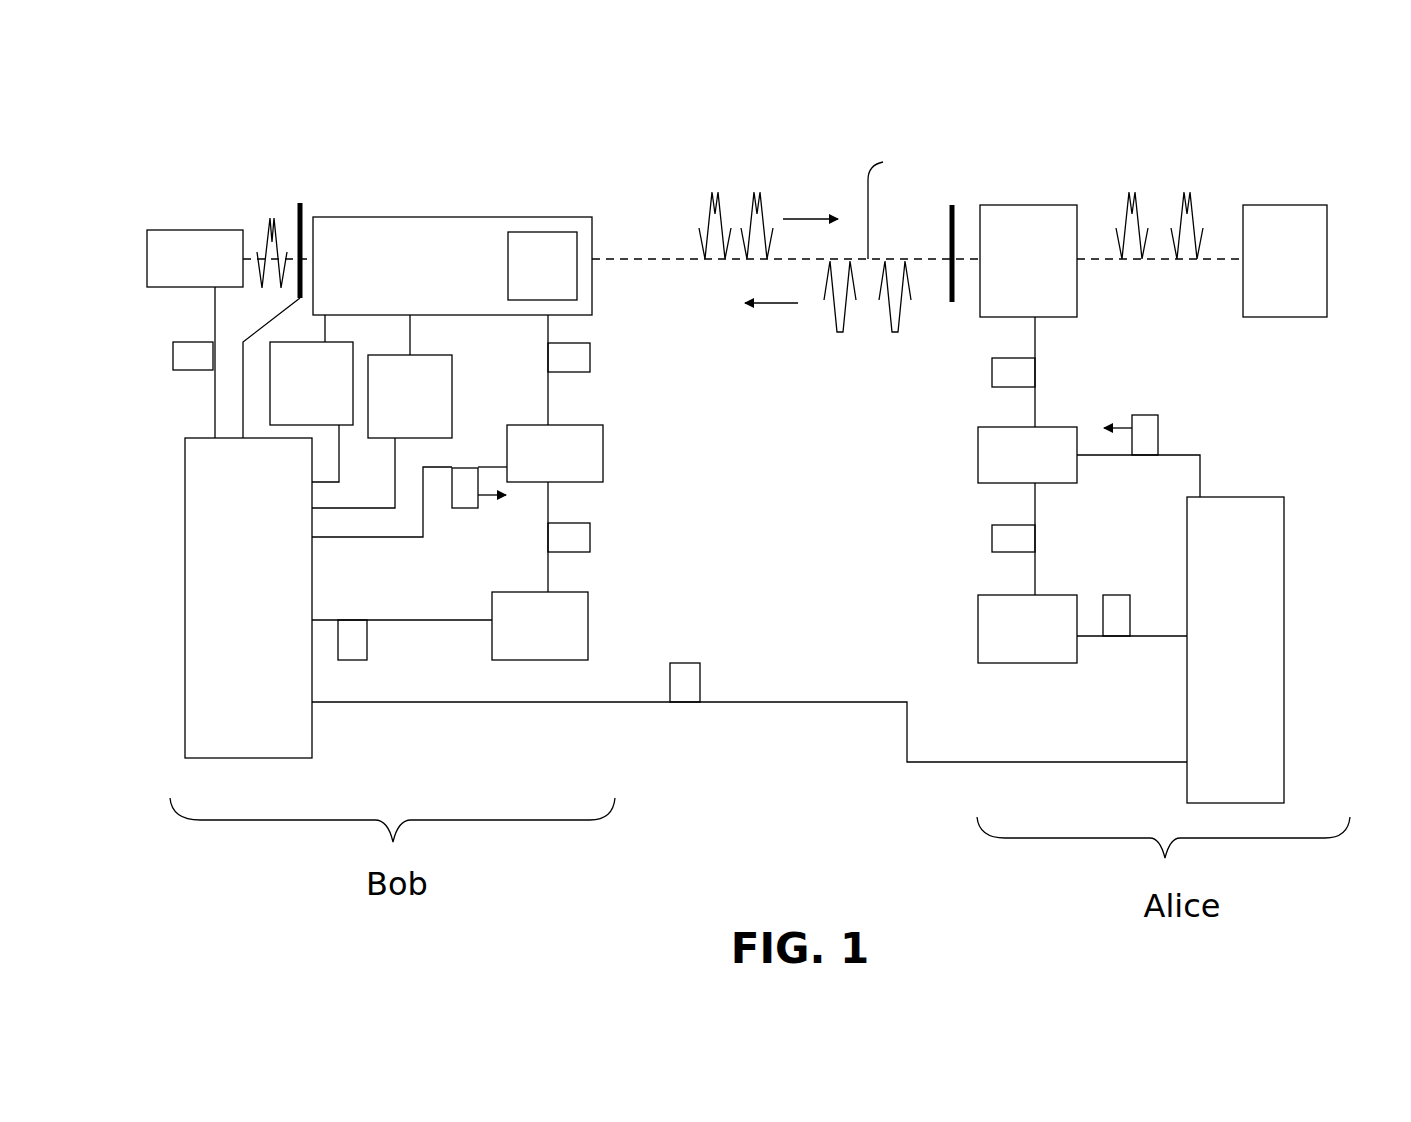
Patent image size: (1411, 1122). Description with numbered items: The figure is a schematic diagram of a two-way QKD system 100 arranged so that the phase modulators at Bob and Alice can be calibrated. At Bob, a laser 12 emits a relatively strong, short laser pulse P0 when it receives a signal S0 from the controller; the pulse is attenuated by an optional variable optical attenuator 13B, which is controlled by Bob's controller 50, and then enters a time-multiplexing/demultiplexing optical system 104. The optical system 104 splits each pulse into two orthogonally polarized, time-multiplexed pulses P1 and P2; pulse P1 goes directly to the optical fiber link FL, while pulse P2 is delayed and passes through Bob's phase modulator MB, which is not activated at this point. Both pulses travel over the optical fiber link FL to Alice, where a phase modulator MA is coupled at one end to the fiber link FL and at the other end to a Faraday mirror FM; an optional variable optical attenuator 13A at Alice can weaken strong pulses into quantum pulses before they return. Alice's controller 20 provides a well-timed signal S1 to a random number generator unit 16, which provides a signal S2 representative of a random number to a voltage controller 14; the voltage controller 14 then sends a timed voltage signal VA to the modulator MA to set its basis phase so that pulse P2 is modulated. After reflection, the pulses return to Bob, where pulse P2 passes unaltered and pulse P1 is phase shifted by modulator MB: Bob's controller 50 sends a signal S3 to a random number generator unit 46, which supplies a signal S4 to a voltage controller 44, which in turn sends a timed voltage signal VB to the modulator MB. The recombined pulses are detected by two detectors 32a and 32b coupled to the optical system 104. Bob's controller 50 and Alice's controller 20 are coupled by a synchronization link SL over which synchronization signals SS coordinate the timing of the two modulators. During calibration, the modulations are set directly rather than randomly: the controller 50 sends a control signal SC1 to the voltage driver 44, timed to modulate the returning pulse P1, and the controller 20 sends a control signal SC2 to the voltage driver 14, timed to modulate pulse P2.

The two-way QKD system 100 is at (1272, 135).
The laser 12 is at (177, 278).
The laser pulse P0 is at (272, 218).
The variable optical attenuator 13B is at (300, 205).
The time-multiplexing/demultiplexing optical system 104 is at (343, 278).
The phase modulator MB is at (520, 283).
The signal S0 is at (173, 350).
The detector 32a is at (336, 402).
The detector 32b is at (435, 415).
The controller 50 is at (230, 615).
The control signal SC1 is at (465, 508).
The voltage controller 44 is at (537, 472).
The voltage signal VB is at (590, 357).
The signal S4 is at (590, 537).
The random number generator unit 46 is at (522, 645).
The signal S3 is at (367, 645).
The synchronization link SL is at (770, 703).
The synchronization signal SS is at (685, 663).
The pulse P1 is at (757, 192).
The pulse P2 is at (715, 192).
The optical fiber link FL is at (894, 204).
The variable optical attenuator 13A is at (952, 205).
The phase modulator MA is at (1005, 278).
The Faraday mirror FM is at (1264, 278).
The voltage signal VA is at (992, 373).
The voltage controller 14 is at (1010, 472).
The control signal SC2 is at (1158, 425).
The signal S2 is at (992, 540).
The signal S1 is at (1117, 595).
The random number generator unit 16 is at (1010, 647).
The controller 20 is at (1215, 668).